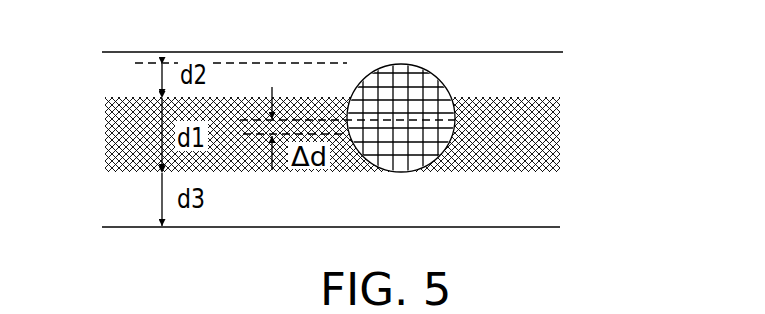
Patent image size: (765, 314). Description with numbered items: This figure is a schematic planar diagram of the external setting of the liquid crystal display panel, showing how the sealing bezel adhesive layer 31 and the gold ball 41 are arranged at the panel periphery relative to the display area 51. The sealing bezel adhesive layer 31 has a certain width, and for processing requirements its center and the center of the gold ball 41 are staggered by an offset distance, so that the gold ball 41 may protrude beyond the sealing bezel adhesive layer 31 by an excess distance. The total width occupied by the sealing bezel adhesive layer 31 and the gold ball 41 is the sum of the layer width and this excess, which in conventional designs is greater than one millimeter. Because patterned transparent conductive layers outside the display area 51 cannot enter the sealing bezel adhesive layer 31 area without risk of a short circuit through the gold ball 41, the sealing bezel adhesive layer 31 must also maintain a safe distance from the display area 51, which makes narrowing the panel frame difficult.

The gold ball 41 is at (455, 82).
The sealing bezel adhesive layer 31 is at (560, 143).
The display area 51 is at (507, 227).